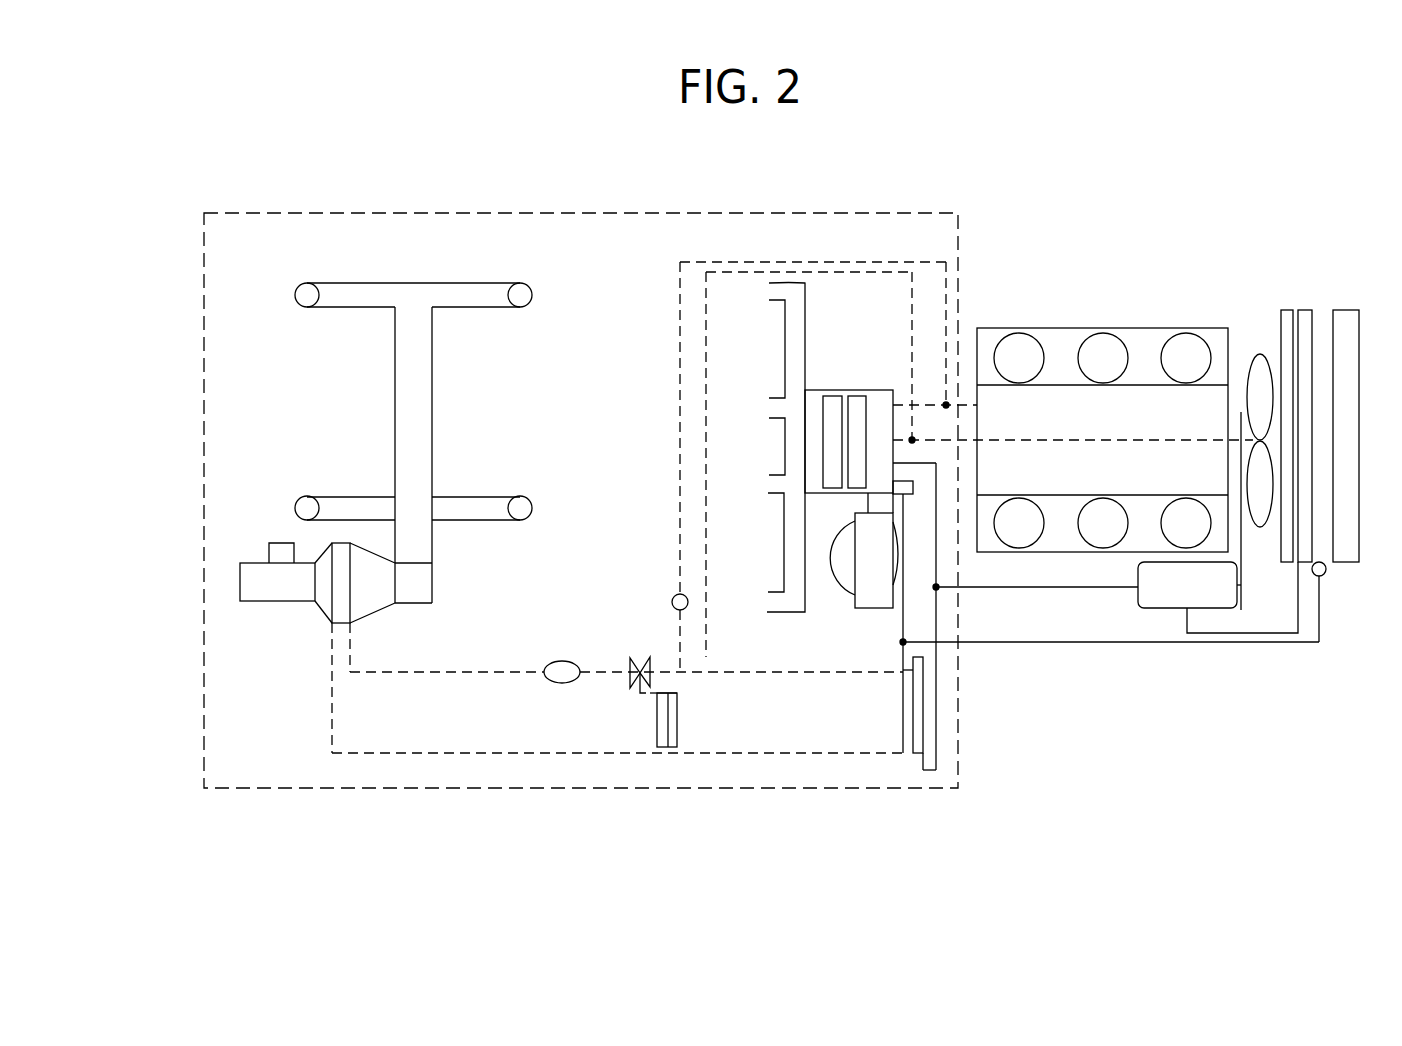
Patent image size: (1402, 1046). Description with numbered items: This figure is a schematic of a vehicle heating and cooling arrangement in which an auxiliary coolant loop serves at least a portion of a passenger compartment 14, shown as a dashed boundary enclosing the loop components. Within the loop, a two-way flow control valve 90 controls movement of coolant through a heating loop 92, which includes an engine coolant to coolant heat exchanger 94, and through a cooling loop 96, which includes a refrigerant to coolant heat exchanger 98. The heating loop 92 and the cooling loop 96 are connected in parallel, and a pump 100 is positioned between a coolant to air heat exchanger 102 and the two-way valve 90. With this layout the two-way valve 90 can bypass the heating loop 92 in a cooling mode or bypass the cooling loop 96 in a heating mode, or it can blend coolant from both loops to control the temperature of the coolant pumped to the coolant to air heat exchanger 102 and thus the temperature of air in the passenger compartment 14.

The passenger compartment 14 is at (204, 369).
The two-way flow control valve 90 is at (631, 657).
The heating loop 92 is at (638, 703).
The engine coolant to coolant heat exchanger 94 is at (661, 752).
The cooling loop 96 is at (820, 760).
The refrigerant to coolant heat exchanger 98 is at (912, 755).
The pump 100 is at (556, 661).
The coolant to air heat exchanger 102 is at (328, 608).